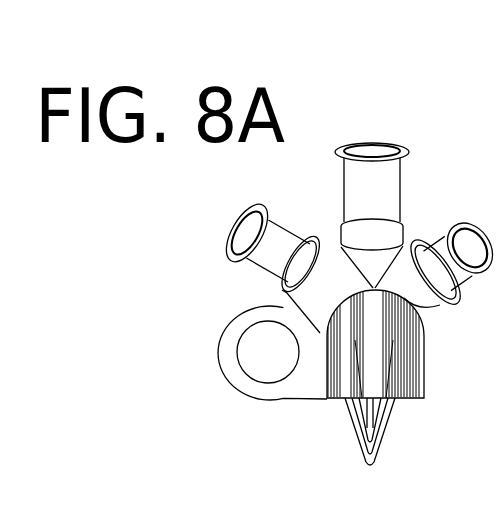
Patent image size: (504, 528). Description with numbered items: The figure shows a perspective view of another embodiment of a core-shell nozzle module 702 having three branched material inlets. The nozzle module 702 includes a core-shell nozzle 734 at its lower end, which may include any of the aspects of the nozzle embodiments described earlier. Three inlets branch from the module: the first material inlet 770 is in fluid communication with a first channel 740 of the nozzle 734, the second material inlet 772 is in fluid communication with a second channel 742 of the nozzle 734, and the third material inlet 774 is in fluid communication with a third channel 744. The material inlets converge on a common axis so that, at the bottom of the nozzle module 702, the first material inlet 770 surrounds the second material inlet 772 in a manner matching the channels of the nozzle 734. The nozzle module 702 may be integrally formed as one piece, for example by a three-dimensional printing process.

The core-shell nozzle module 702 is at (346, 112).
The second material inlet 772 is at (376, 147).
The first material inlet 770 is at (246, 236).
The third material inlet 774 is at (468, 245).
The first channel 740 is at (347, 405).
The core-shell nozzle 734 is at (350, 422).
The second channel 742 is at (373, 405).
The third channel 744 is at (372, 415).